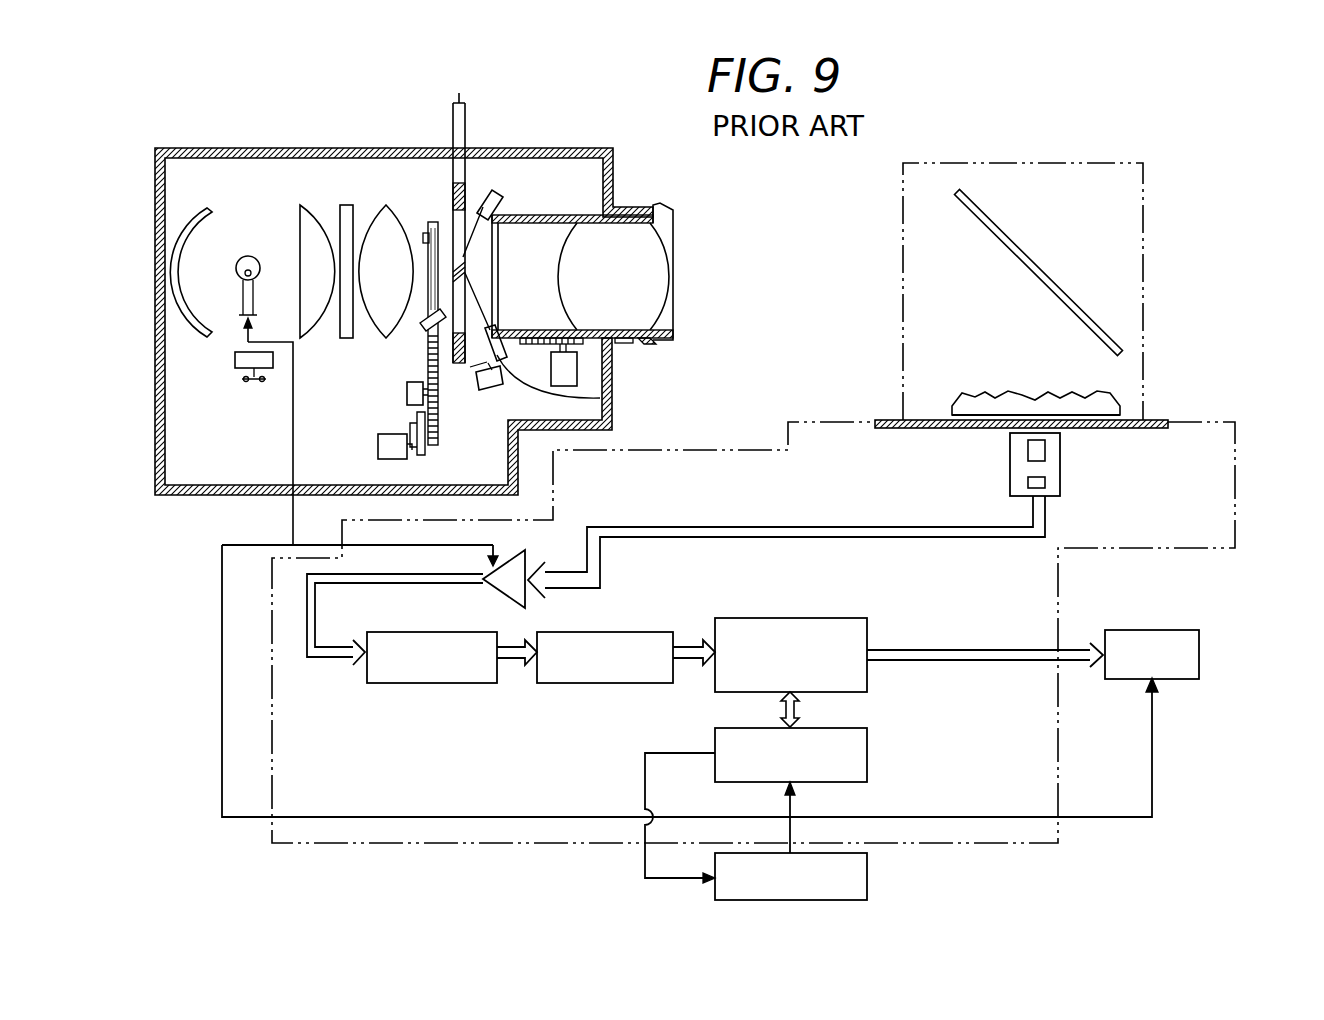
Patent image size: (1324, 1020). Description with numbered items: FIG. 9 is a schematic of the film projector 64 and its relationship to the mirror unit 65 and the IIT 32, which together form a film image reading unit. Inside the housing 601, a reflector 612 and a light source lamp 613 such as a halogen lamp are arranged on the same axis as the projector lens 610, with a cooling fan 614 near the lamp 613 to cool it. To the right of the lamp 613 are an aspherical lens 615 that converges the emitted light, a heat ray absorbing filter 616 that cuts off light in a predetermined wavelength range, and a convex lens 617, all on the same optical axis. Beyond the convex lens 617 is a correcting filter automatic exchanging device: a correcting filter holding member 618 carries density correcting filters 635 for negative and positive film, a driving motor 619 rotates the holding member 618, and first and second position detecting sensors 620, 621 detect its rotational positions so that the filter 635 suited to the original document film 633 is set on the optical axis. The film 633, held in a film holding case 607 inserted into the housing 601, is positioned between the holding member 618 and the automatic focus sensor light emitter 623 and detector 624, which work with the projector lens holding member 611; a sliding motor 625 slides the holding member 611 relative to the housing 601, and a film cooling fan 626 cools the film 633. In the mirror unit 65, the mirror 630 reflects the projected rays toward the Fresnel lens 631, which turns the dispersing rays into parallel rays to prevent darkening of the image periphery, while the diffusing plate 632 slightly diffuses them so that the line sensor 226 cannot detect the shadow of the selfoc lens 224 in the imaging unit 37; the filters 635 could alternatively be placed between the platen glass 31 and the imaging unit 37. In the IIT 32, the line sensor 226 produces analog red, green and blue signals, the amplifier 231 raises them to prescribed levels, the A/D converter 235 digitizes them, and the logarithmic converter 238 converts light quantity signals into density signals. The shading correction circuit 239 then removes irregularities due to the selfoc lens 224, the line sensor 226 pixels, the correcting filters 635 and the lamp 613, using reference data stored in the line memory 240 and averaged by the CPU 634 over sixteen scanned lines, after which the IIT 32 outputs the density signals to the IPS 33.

The film projector 64 is at (152, 215).
The housing 601 is at (155, 322).
The reflector 612 is at (195, 214).
The light source lamp 613 is at (247, 254).
The cooling fan 614 is at (235, 360).
The aspherical lens 615 is at (305, 207).
The heat ray absorbing filter 616 is at (346, 204).
The convex lens 617 is at (388, 204).
The correcting filter holding member 618 is at (436, 220).
The density correcting filter 635 is at (420, 238).
The film holding case 607 is at (468, 178).
The original document film 633 is at (490, 195).
The automatic focus sensor light emitter 623 is at (502, 201).
The projector lens holding member 611 is at (640, 208).
The projector lens 610 is at (662, 245).
The sliding motor 625 is at (577, 370).
The automatic focus sensor detector 624 is at (603, 398).
The film cooling fan 626 is at (484, 394).
The driving motor 619 is at (378, 447).
The first position detecting sensor 620 is at (407, 392).
The second position detecting sensor 621 is at (389, 387).
The mirror unit 65 is at (1145, 200).
The mirror 630 is at (1100, 318).
The Fresnel lens 631 is at (1122, 402).
The diffusing plate 632 is at (1128, 417).
The platen glass 31 is at (1150, 430).
The imaging unit 37 is at (1010, 470).
The selfoc lens 224 is at (1047, 455).
The line sensor 226 is at (1047, 483).
The IIT 32 is at (1240, 522).
The amplifier 231 is at (526, 594).
The analog-digital converter 235 is at (390, 687).
The logarithmic converter 238 is at (560, 687).
The shading correction circuit 239 is at (843, 618).
The IPS 33 is at (1200, 657).
The line memory 240 is at (867, 767).
The central processing unit 634 is at (867, 887).